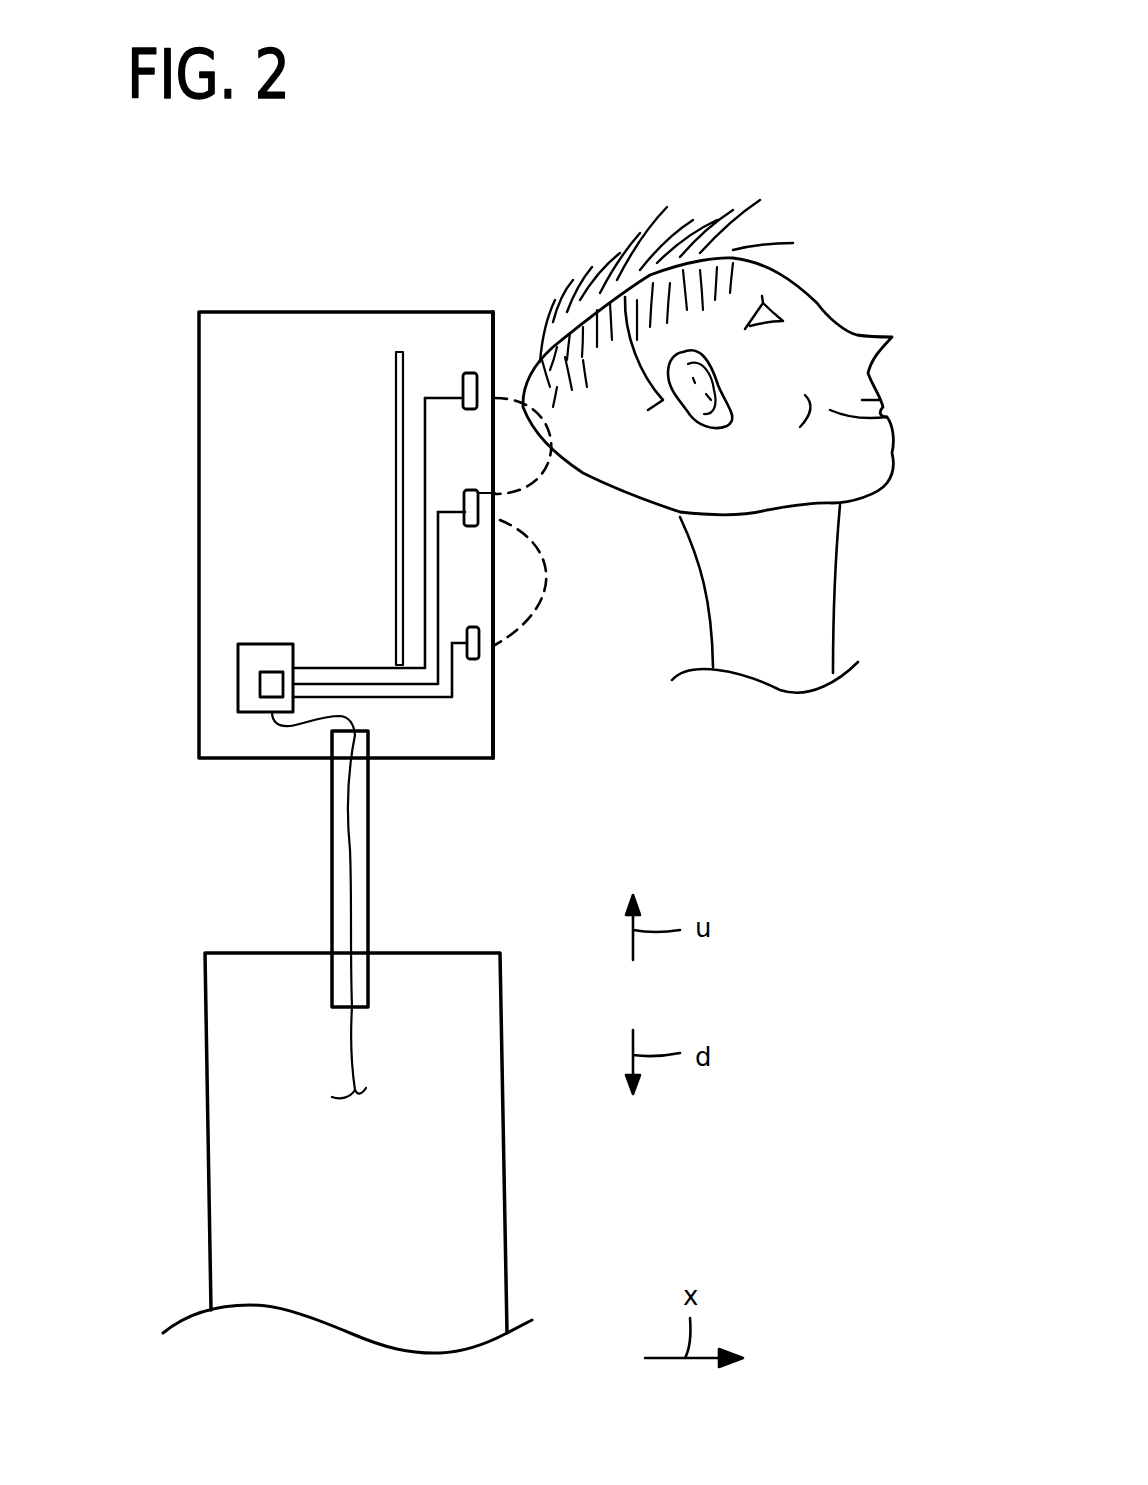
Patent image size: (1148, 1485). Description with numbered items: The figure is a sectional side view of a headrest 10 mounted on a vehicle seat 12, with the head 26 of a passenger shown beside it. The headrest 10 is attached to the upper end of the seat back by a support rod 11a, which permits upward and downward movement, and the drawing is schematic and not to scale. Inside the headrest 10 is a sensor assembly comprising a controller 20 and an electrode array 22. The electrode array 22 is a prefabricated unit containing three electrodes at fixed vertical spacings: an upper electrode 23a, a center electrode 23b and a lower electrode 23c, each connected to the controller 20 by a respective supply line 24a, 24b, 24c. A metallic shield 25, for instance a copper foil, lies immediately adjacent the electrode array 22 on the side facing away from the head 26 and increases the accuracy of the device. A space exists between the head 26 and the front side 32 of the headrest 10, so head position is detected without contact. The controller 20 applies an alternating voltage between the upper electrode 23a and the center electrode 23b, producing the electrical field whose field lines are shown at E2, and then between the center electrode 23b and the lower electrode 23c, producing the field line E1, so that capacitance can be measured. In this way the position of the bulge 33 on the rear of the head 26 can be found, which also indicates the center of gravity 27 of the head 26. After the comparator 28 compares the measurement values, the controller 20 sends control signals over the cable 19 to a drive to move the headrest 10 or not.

The headrest 10 is at (253, 327).
The front side 32 is at (497, 330).
The metallic shield 25 is at (396, 368).
The electrode array 22 is at (436, 352).
The upper electrode 23a is at (470, 373).
The center electrode 23b is at (478, 505).
The lower electrode 23c is at (479, 652).
The supply line 24a is at (425, 442).
The supply line 24b is at (438, 545).
The supply line 24c is at (438, 658).
The controller 20 is at (252, 651).
The comparator 28 is at (260, 686).
The cable 19 is at (290, 726).
The support rod 11a is at (362, 910).
The vehicle seat 12 is at (237, 993).
The head 26 is at (819, 296).
The center of gravity 27 is at (627, 297).
The bulge 33 is at (546, 392).
The field lines E2 is at (507, 487).
The field line E1 is at (543, 565).